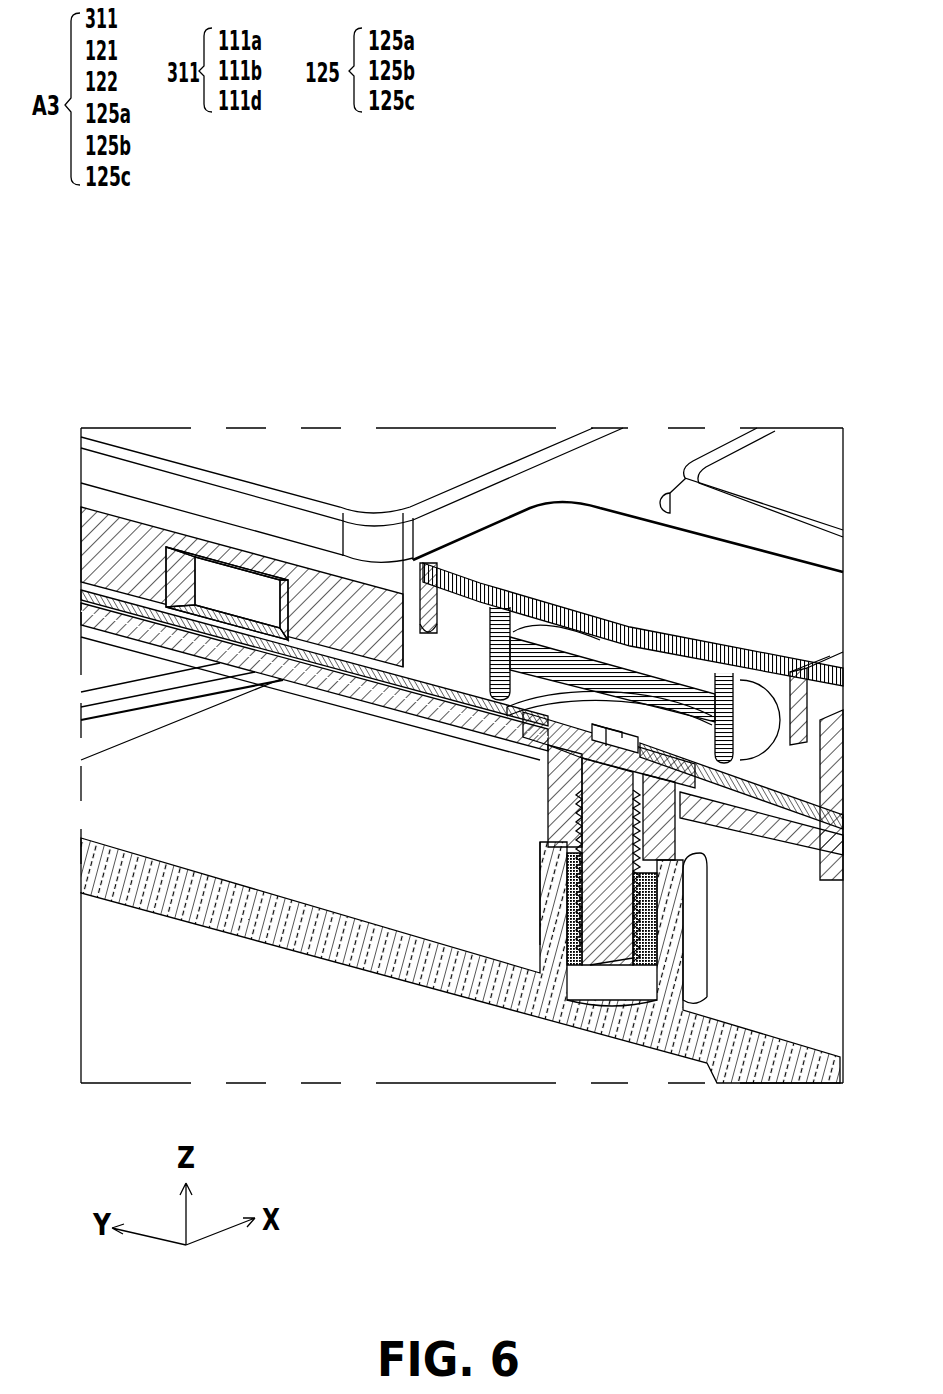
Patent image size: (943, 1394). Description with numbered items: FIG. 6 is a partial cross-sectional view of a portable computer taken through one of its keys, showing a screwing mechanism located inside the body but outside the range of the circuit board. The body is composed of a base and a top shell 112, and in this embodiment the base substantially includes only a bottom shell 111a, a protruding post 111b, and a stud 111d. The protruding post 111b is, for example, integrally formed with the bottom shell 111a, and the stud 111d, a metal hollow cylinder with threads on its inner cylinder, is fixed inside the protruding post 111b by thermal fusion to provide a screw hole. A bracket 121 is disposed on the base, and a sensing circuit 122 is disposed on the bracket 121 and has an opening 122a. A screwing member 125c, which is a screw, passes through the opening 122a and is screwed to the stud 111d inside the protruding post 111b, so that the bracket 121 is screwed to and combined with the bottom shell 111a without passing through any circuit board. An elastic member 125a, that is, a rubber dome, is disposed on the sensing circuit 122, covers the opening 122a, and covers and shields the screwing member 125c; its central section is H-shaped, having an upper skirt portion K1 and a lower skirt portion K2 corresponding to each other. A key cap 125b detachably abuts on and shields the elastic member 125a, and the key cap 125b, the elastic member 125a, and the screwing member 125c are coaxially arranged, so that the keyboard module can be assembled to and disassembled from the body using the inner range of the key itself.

The top shell 112 is at (120, 547).
The bracket 121 is at (400, 708).
The sensing circuit 122 is at (430, 677).
The opening 122a is at (530, 699).
The elastic member 125a is at (620, 683).
The key cap 125b is at (727, 567).
The screwing member 125c is at (716, 735).
The bottom shell 111a is at (440, 993).
The protruding post 111b is at (697, 963).
The stud 111d is at (577, 905).
The upper skirt portion K1 is at (754, 694).
The lower skirt portion K2 is at (753, 750).